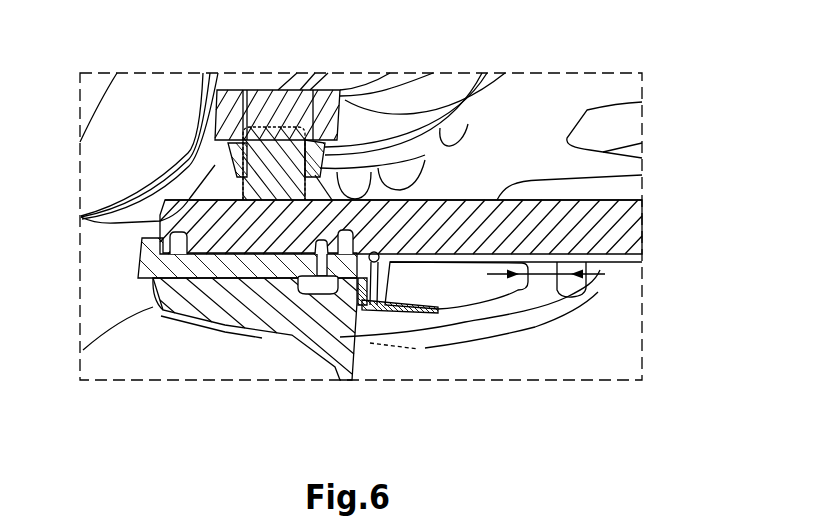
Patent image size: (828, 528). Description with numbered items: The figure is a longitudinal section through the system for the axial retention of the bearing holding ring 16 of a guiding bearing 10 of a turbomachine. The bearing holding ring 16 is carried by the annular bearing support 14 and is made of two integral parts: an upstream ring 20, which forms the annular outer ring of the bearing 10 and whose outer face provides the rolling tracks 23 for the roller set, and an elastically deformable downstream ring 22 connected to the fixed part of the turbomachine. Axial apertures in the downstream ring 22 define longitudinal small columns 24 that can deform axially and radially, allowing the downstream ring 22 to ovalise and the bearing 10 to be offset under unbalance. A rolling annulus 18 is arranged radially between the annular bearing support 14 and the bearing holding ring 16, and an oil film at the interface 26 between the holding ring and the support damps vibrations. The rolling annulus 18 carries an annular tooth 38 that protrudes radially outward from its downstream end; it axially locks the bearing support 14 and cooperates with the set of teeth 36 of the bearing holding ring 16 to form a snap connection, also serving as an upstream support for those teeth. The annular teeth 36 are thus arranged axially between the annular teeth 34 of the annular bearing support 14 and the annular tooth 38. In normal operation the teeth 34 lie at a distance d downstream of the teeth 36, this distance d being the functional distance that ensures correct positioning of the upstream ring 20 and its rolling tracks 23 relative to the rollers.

The bearing 10 is at (270, 155).
The annular bearing support 14 is at (408, 362).
The bearing holding ring 16 is at (180, 276).
The rolling annulus 18 is at (213, 280).
The upstream ring 20 is at (222, 228).
The downstream ring 22 is at (572, 285).
The rolling tracks 23 is at (225, 199).
The small columns 24 is at (620, 167).
The interface 26 is at (248, 280).
The first axial retention element 34 is at (600, 268).
The second axial retention element 36 is at (445, 287).
The annular tooth 38 is at (368, 315).
The distance d is at (540, 278).